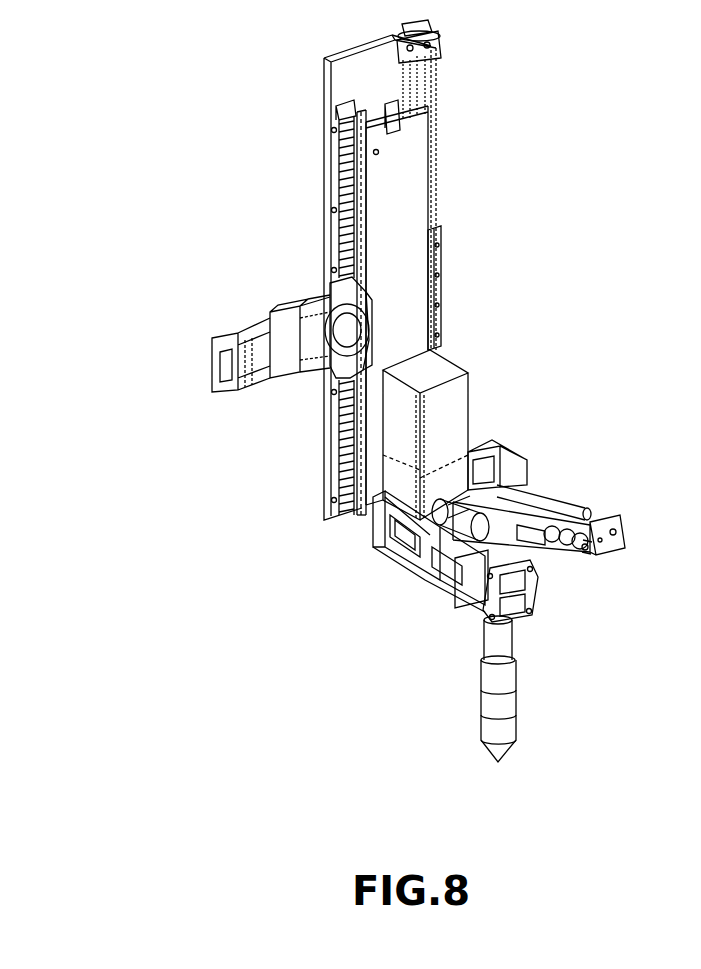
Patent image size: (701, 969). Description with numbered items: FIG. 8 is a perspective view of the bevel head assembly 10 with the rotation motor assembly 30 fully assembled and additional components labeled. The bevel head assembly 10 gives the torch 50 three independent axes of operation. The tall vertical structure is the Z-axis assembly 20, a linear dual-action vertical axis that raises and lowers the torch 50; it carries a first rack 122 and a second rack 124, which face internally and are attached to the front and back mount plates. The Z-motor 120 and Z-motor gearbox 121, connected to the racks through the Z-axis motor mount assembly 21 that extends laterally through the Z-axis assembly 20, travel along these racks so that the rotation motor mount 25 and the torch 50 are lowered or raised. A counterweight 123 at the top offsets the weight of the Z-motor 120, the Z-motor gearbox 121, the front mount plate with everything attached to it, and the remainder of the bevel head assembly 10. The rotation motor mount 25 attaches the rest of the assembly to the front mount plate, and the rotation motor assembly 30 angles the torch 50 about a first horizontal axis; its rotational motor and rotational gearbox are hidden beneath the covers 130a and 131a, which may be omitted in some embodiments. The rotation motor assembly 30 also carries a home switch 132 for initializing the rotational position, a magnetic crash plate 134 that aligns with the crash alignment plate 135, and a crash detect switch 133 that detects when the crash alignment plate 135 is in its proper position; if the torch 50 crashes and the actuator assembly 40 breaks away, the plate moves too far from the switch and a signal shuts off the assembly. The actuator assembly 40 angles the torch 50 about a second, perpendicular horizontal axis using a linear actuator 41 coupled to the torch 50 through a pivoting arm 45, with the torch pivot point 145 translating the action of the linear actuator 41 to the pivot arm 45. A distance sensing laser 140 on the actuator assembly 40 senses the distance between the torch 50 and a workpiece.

The bevel head assembly 10 is at (518, 190).
The Z-axis assembly 20 is at (250, 122).
The Z-axis motor mount assembly 21 is at (332, 296).
The rotation motor mount 25 is at (380, 480).
The rotation motor assembly 30 is at (530, 303).
The actuator assembly 40 is at (555, 567).
The linear actuator 41 is at (592, 522).
The pivoting arm 45 is at (588, 547).
The torch 50 is at (500, 657).
The Z-motor 120 is at (215, 348).
The Z-motor gearbox 121 is at (282, 320).
The first rack 122 is at (338, 217).
The counterweight 123 is at (435, 75).
The second rack 124 is at (338, 224).
The cover 130a is at (450, 405).
The cover 131a is at (507, 473).
The home switch 132 is at (360, 517).
The crash detect switch 133 is at (388, 548).
The magnetic crash plate 134 is at (420, 580).
The crash alignment plate 135 is at (416, 578).
The distance sensing laser 140 is at (470, 570).
The torch pivot point 145 is at (478, 600).